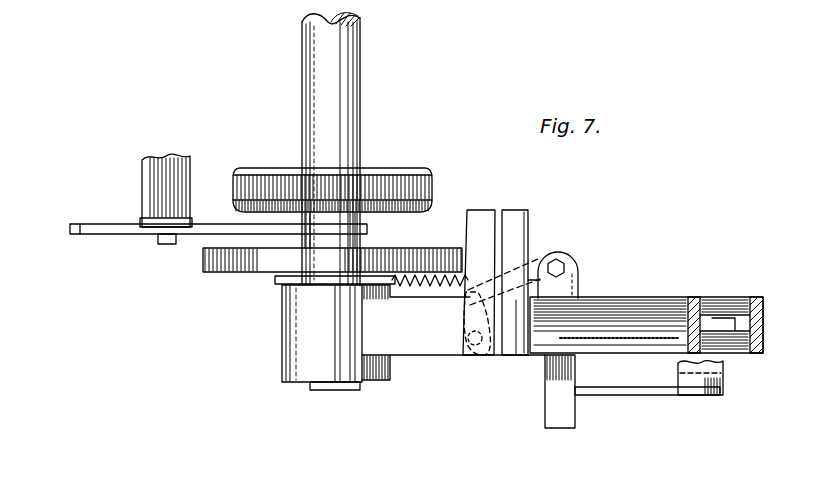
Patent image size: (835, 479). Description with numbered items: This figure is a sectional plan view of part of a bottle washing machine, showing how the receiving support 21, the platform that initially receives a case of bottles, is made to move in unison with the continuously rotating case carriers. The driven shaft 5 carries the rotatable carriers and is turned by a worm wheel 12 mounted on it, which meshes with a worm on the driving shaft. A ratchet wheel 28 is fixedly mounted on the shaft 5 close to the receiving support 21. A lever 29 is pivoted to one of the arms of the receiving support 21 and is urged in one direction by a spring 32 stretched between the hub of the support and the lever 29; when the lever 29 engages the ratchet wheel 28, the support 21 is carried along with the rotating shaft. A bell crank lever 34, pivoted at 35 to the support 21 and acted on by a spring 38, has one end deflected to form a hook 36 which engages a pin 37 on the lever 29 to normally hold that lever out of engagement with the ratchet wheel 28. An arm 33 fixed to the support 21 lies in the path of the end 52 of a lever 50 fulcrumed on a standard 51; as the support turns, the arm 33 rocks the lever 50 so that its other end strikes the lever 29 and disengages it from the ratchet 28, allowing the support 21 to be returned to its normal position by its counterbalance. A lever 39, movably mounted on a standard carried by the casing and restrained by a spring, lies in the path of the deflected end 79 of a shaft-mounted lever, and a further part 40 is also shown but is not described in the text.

The driven shaft 5 is at (316, 92).
The worm wheel 12 is at (377, 173).
The receiving support 21 is at (663, 302).
The ratchet wheel 28 is at (244, 272).
The lever 29 is at (481, 210).
The spring 32 is at (428, 286).
The arm 33 is at (522, 216).
The bell crank lever 34 is at (567, 418).
The pivot 35 is at (557, 262).
The hook 36 is at (460, 300).
The pin 37 is at (500, 353).
The spring 38 is at (602, 320).
The lever 39 is at (628, 395).
The stop block 40 is at (715, 394).
The lever 50 is at (129, 234).
The standard 51 is at (176, 166).
The end of lever 52 is at (72, 236).
The deflected upper end 79 is at (518, 342).